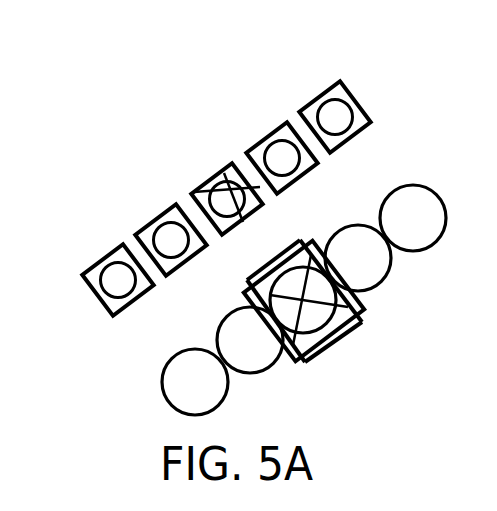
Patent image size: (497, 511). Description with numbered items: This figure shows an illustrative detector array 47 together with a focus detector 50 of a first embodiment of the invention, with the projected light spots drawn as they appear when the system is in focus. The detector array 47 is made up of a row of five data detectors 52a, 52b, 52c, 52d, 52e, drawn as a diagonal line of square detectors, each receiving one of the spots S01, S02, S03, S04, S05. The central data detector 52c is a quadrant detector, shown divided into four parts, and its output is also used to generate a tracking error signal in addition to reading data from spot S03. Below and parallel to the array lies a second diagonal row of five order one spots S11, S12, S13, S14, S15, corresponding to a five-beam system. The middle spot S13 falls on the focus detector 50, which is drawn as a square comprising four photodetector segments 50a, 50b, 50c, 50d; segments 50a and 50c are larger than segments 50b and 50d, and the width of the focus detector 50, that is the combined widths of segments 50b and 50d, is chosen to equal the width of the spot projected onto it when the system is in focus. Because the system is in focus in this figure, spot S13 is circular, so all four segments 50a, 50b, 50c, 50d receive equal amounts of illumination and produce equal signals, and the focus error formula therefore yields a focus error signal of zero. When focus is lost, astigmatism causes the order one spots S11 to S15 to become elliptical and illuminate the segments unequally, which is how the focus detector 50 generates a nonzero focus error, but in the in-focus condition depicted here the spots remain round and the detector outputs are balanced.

The detector array 47 is at (110, 127).
The data detector 52a is at (92, 280).
The data detector 52b is at (152, 237).
The data detector 52c is at (225, 172).
The data detector 52d is at (278, 133).
The data detector 52e is at (337, 82).
The spot S01 is at (112, 297).
The spot S02 is at (177, 243).
The spot S03 is at (217, 183).
The spot S04 is at (308, 168).
The spot S05 is at (338, 110).
The order 1 spot S11 is at (185, 367).
The order 1 spot S12 is at (237, 330).
The spot S13 is at (327, 323).
The order 1 spot S14 is at (368, 258).
The order 1 spot S15 is at (410, 212).
The focus detector 50 is at (322, 355).
The photodetector segment 50a is at (295, 255).
The photodetector segment 50b is at (352, 302).
The photodetector segment 50c is at (347, 322).
The photodetector segment 50d is at (307, 330).